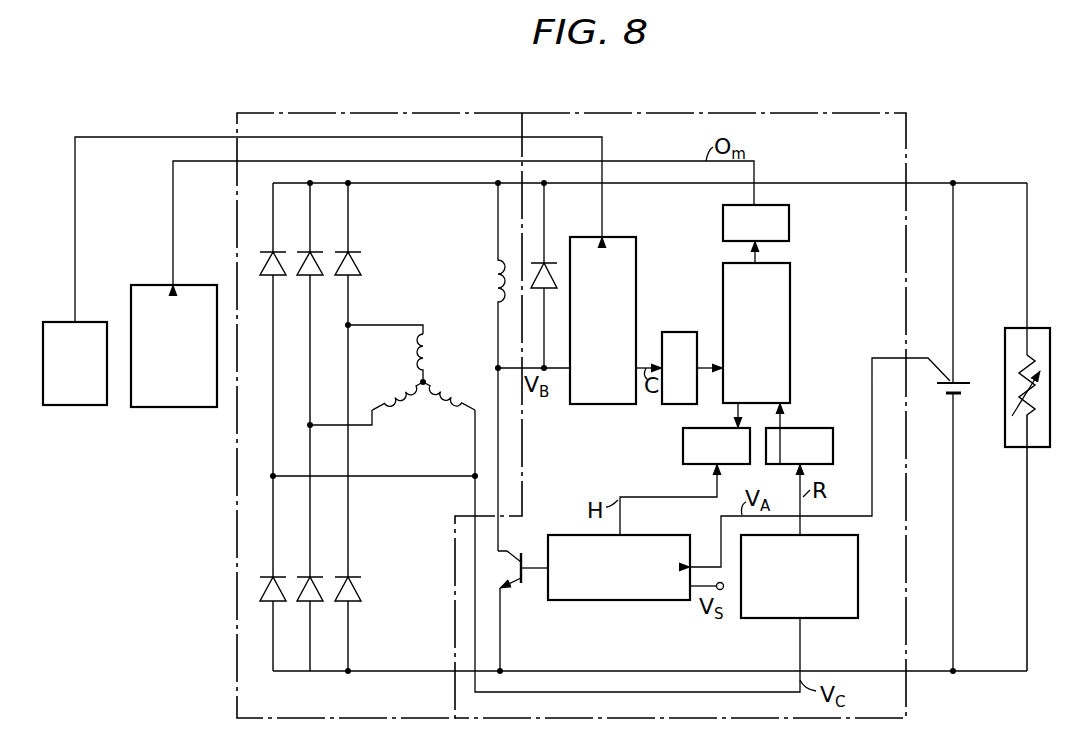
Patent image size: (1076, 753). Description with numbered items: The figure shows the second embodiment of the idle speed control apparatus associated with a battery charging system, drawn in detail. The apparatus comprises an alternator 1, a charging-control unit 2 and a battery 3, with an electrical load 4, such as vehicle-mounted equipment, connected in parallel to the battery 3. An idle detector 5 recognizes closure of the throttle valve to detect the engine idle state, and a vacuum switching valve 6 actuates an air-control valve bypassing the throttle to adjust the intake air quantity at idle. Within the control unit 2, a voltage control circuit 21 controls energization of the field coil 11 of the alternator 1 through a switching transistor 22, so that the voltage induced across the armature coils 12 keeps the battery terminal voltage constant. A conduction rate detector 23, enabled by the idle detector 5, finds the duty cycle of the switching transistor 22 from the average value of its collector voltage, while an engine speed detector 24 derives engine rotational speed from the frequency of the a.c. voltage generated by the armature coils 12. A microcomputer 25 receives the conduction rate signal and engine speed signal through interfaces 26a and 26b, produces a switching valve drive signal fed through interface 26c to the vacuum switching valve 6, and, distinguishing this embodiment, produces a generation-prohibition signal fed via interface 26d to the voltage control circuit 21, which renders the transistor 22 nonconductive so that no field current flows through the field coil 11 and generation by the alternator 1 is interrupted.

The alternator 1 is at (435, 113).
The charging-control unit 2 is at (780, 113).
The battery 3 is at (970, 388).
The electrical load 4 is at (1057, 364).
The idle detector 5 is at (88, 322).
The vacuum switching valve 6 is at (195, 285).
The field coil 11 is at (493, 290).
The armature coils 12 is at (424, 393).
The voltage control circuit 21 is at (648, 535).
The switching transistor 22 is at (512, 553).
The conduction rate detector 23 is at (617, 237).
The engine speed detector 24 is at (859, 565).
The microcomputer 25 is at (792, 300).
The interface 26a is at (672, 332).
The interface 26b is at (800, 428).
The interface 26c is at (800, 218).
The interface 26d is at (683, 444).